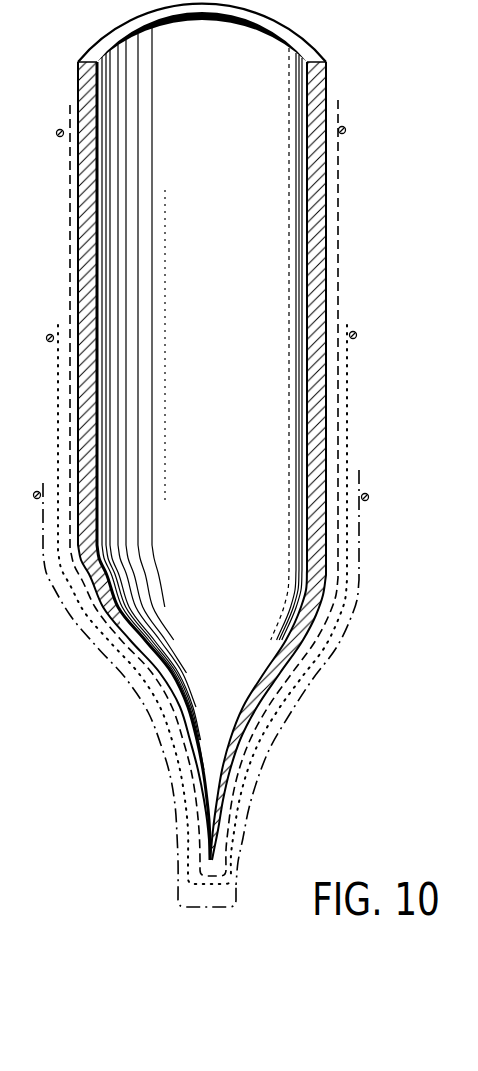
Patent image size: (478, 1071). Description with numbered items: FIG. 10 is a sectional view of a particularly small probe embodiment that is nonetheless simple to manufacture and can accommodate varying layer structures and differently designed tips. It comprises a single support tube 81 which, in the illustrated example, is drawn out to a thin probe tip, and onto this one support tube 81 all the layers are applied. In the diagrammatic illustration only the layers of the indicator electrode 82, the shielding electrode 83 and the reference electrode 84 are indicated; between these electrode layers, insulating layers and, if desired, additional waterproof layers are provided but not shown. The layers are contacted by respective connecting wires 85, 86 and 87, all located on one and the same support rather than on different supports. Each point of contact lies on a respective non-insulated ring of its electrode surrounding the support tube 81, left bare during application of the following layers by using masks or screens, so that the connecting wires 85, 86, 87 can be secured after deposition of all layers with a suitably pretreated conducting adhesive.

The support tube 81 is at (317, 90).
The indicator electrode 82 is at (338, 225).
The shielding electrode 83 is at (347, 400).
The reference electrode 84 is at (357, 590).
The connecting wire 85 is at (56, 134).
The connecting wire 86 is at (47, 342).
The connecting wire 87 is at (34, 500).